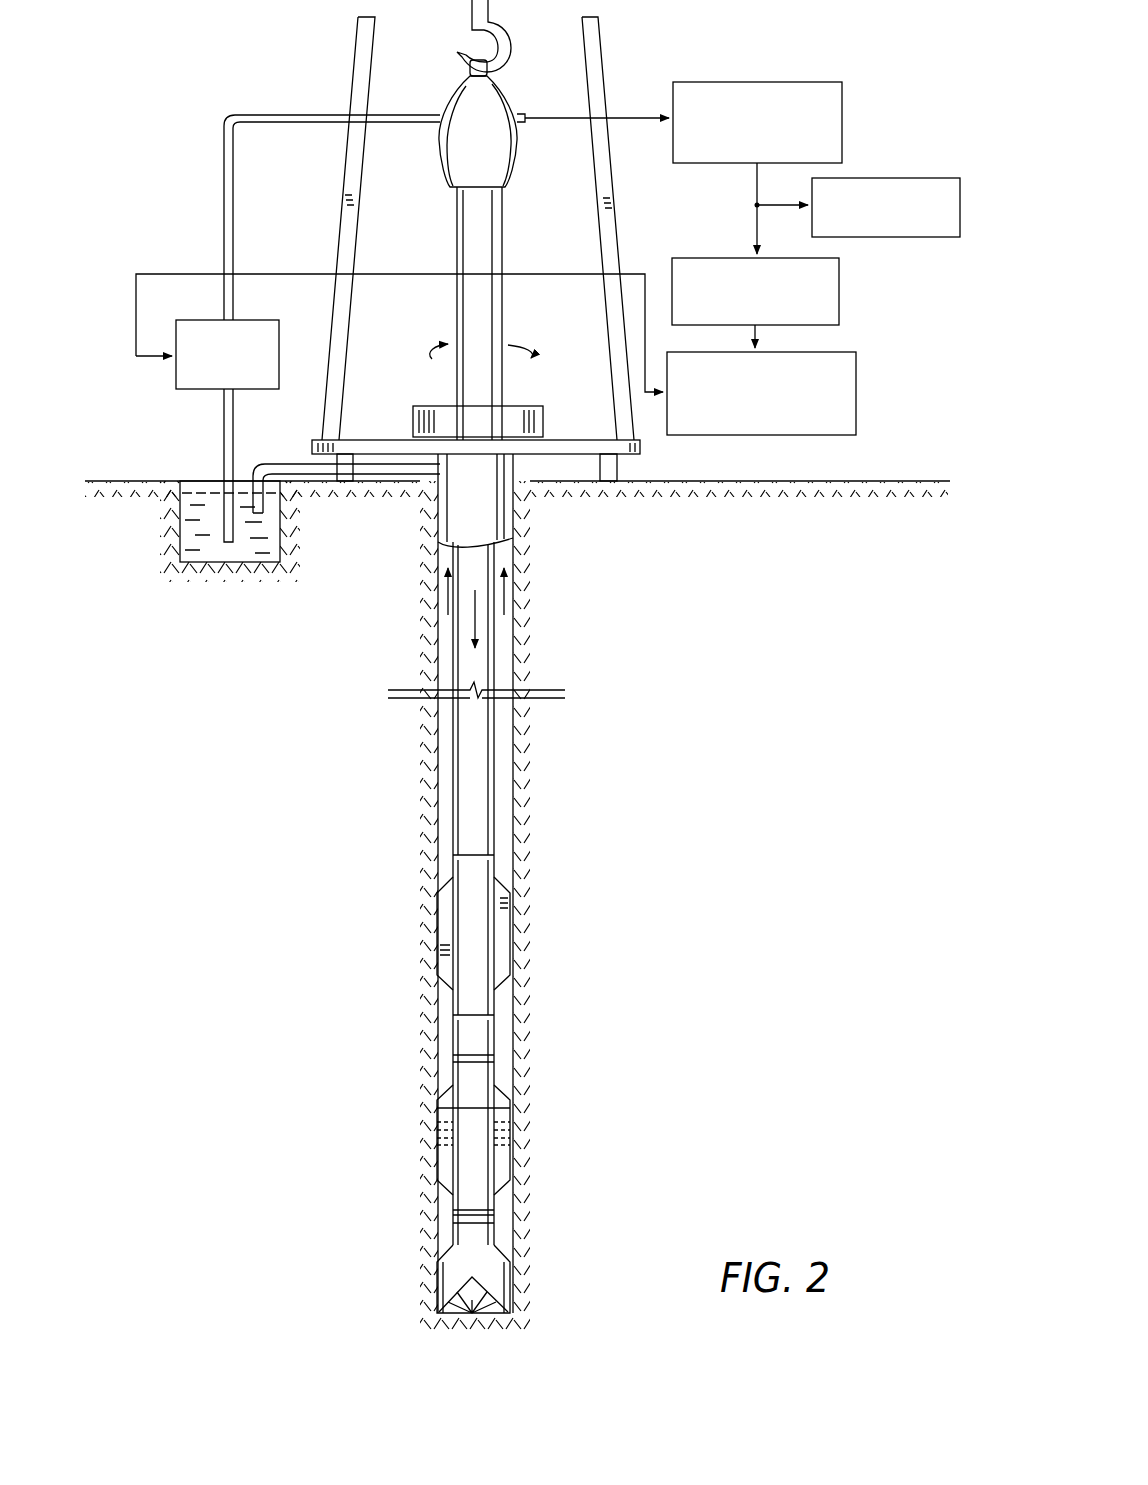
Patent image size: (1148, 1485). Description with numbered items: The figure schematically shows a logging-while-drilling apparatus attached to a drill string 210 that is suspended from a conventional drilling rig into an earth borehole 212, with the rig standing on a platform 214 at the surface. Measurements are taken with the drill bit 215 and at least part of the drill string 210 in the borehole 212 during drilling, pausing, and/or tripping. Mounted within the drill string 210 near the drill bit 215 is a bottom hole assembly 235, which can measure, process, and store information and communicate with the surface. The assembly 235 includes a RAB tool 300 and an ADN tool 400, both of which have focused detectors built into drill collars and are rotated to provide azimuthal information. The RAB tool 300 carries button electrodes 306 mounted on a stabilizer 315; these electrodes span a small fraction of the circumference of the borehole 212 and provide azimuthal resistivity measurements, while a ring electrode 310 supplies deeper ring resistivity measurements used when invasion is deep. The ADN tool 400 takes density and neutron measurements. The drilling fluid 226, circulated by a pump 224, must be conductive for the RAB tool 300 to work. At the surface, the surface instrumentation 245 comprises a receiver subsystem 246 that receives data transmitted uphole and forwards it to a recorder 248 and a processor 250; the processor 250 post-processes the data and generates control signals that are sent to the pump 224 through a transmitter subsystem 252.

The drill string 210 is at (622, 773).
The earth borehole 212 is at (508, 641).
The drilling rig platform 214 is at (656, 453).
The drill bit 215 is at (453, 1298).
The pump 224 is at (185, 390).
The drilling fluid 226 is at (245, 548).
The bottom hole assembly 235 is at (470, 824).
The surface instrumentation 245 is at (715, 56).
The receiver subsystem 246 is at (843, 100).
The recorder 248 is at (910, 178).
The processor 250 is at (840, 291).
The transmitter subsystem 252 is at (857, 393).
The RAB tool 300 is at (490, 1133).
The button electrodes 306 is at (435, 1146).
The ring electrode 310 is at (463, 1223).
The stabilizer 315 is at (502, 1108).
The ADN tool 400 is at (587, 856).